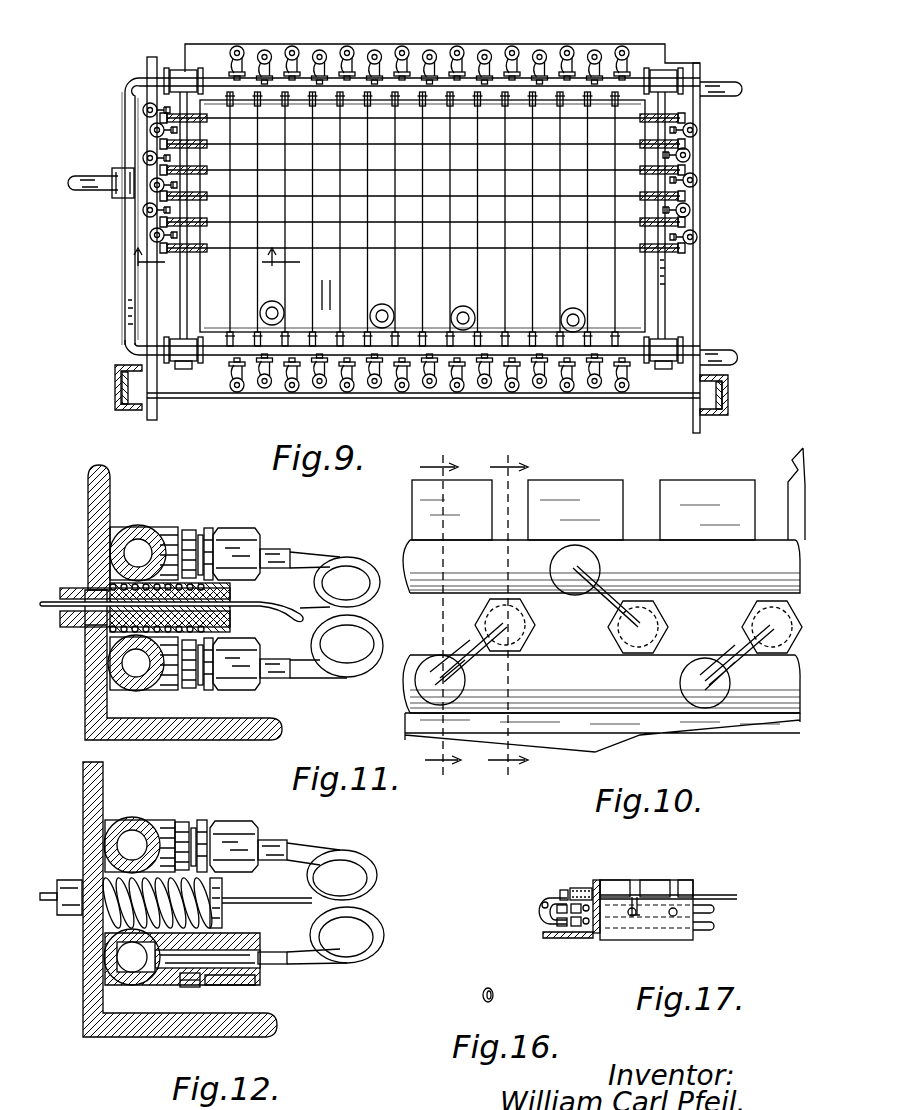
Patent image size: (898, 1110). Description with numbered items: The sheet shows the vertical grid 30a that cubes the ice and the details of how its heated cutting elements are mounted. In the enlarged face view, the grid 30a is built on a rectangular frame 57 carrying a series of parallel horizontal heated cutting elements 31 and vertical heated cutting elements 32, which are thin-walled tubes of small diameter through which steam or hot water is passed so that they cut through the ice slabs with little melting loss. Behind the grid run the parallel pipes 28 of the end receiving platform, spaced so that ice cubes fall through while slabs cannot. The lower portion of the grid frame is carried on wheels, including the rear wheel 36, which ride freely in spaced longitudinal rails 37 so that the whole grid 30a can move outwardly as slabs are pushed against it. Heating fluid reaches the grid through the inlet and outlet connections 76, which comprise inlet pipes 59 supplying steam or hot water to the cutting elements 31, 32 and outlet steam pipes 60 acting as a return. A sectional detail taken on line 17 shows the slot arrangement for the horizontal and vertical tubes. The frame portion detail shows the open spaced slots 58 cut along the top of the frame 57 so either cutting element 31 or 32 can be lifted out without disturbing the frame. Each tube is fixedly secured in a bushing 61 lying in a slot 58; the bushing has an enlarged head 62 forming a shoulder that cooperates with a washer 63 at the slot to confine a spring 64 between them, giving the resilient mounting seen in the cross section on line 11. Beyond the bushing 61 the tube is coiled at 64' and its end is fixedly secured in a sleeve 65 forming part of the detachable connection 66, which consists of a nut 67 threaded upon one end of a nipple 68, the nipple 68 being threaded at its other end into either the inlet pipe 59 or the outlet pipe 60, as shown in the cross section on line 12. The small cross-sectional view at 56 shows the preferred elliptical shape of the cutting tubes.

In FIG. 9, the rectangular frame 57 is at (215, 44).
In FIG. 11, the rectangular frame 57 is at (167, 742).
In FIG. 10, the rectangular frame 57 is at (737, 725).
In FIG. 12, the rectangular frame 57 is at (125, 1037).
In FIG. 9, the vertical grid 30a is at (465, 40).
In FIG. 9, the inlet pipe 59 is at (520, 86).
In FIG. 11, the inlet pipe 59 is at (137, 530).
In FIG. 10, the inlet pipe 59 is at (692, 553).
In FIG. 12, the inlet pipe 59 is at (133, 818).
In FIG. 9, the inlet and outlet connections 76 is at (735, 82).
In FIG. 9, the horizontal heated cutting element 31 is at (298, 120).
In FIG. 11, the horizontal heated cutting element 31 is at (42, 604).
In FIG. 12, the horizontal heated cutting element 31 is at (45, 892).
In FIG. 17, the horizontal heated cutting element 31 is at (726, 895).
In FIG. 9, the vertical heated cutting element 32 is at (368, 163).
In FIG. 17, the vertical heated cutting element 32 is at (675, 916).
In FIG. 9, the detachable connection 66 is at (692, 198).
In FIG. 11, the detachable connection 66 is at (258, 518).
In FIG. 12, the detachable connection 66 is at (289, 840).
In FIG. 9, the section line 17 is at (215, 248).
In FIG. 9, the open spaced slot 58 is at (228, 276).
In FIG. 11, the open spaced slot 58 is at (90, 497).
In FIG. 10, the open spaced slot 58 is at (772, 472).
In FIG. 17, the open spaced slot 58 is at (634, 880).
In FIG. 9, the bushing 61 is at (330, 300).
In FIG. 11, the bushing 61 is at (72, 588).
In FIG. 9, the parallel pipes 28 is at (458, 306).
In FIG. 9, the longitudinal rail 37 is at (116, 392).
In FIG. 9, the rear wheel 36 is at (127, 404).
In FIG. 9, the coil 64' is at (429, 389).
In FIG. 11, the coil 64' is at (345, 606).
In FIG. 10, the coil 64' is at (594, 626).
In FIG. 12, the coil 64' is at (359, 906).
In FIG. 17, the coil 64' is at (543, 897).
In FIG. 11, the spring 64 is at (160, 682).
In FIG. 11, the washer 63 is at (86, 638).
In FIG. 11, the enlarged head 62 is at (222, 598).
In FIG. 10, the enlarged head 62 is at (680, 670).
In FIG. 12, the enlarged head 62 is at (222, 897).
In FIG. 11, the outlet steam pipe 60 is at (126, 662).
In FIG. 10, the outlet steam pipe 60 is at (568, 656).
In FIG. 12, the outlet steam pipe 60 is at (128, 970).
In FIG. 11, the nipple 68 is at (205, 530).
In FIG. 12, the nipple 68 is at (203, 822).
In FIG. 11, the nut 67 is at (258, 535).
In FIG. 12, the nut 67 is at (238, 826).
In FIG. 11, the sleeve 65 is at (276, 672).
In FIG. 12, the sleeve 65 is at (274, 966).
In FIG. 16, the cutting tube cross section 56 is at (494, 992).
In FIG. 10, the section line 11 is at (510, 618).
In FIG. 10, the section line 12 is at (443, 617).